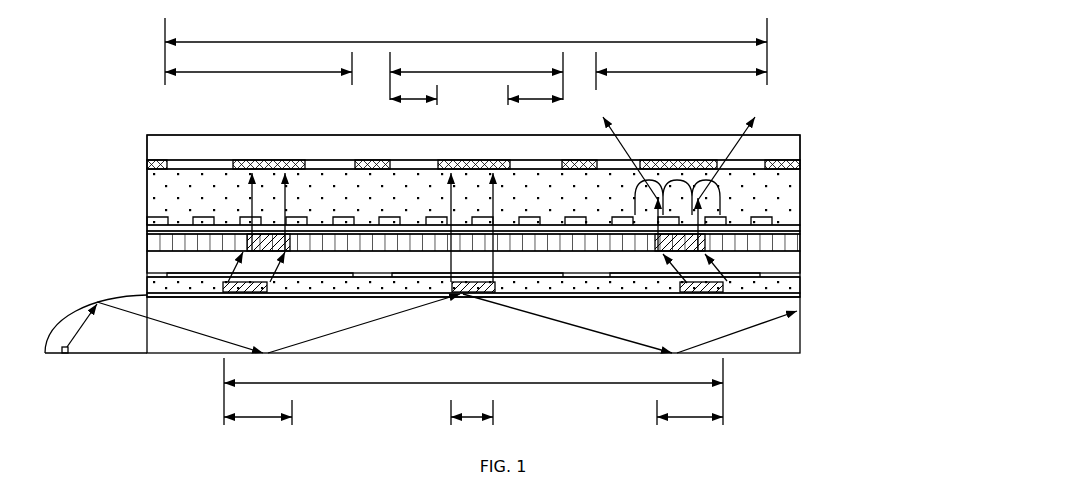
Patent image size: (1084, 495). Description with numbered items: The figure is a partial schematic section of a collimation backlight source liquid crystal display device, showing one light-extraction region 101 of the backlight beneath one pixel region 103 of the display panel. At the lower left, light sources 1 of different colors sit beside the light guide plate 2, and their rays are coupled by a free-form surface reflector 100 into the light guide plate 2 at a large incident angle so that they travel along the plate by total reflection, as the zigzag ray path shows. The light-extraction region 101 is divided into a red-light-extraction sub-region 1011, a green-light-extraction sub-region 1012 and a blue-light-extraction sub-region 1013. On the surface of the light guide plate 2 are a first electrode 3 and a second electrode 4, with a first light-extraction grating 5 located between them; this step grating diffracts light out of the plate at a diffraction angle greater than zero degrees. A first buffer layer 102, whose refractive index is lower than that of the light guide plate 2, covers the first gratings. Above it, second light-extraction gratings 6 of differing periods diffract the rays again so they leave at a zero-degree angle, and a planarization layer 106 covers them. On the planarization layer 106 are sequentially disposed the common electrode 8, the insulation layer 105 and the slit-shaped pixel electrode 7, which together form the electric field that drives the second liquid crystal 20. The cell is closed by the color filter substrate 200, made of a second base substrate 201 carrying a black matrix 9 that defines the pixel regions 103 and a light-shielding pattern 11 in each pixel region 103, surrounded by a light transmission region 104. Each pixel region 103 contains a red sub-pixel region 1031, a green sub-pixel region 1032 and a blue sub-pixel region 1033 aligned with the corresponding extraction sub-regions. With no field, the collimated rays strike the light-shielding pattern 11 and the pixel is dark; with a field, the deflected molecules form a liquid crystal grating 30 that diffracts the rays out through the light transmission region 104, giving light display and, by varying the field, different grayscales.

The light source 1 is at (68, 353).
The light guide plate 2 is at (785, 328).
The first electrode 3 is at (775, 277).
The second electrode 4 is at (775, 295).
The first light-extraction grating 5 is at (225, 290).
The second light-extraction grating 6 is at (790, 247).
The pixel electrode 7 is at (768, 222).
The common electrode 8 is at (797, 232).
The black matrix 9 is at (373, 160).
The light-shielding pattern 11 is at (463, 160).
The second liquid crystal 20 is at (773, 182).
The liquid crystal grating 30 is at (718, 185).
The free-form surface reflector 100 is at (50, 333).
The light-extraction region 101 is at (473, 391).
The first buffer layer 102 is at (785, 262).
The pixel region 103 is at (466, 51).
The light transmission region 104 is at (476, 91).
The insulation layer 105 is at (158, 226).
The planarization layer 106 is at (790, 242).
The color filter substrate 200 is at (212, 148).
The second base substrate 201 is at (773, 145).
The red-light-extraction sub-region 1011 is at (258, 408).
The green-light-extraction sub-region 1012 is at (472, 408).
The blue-light-extraction sub-region 1013 is at (690, 408).
The red sub-pixel region 1031 is at (258, 68).
The green sub-pixel region 1032 is at (476, 75).
The blue sub-pixel region 1033 is at (681, 70).